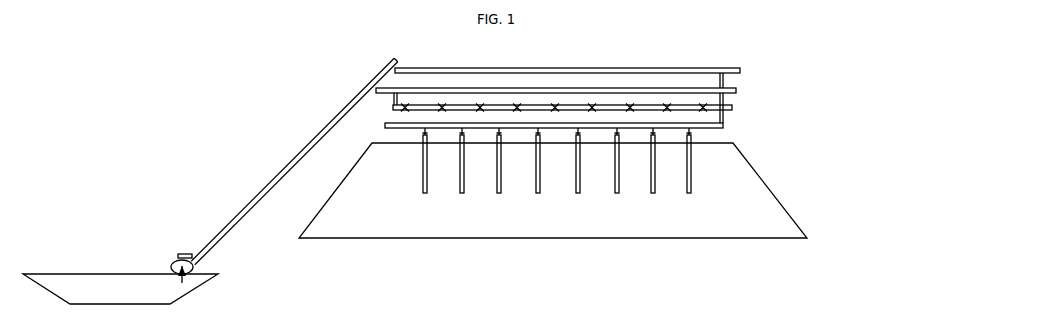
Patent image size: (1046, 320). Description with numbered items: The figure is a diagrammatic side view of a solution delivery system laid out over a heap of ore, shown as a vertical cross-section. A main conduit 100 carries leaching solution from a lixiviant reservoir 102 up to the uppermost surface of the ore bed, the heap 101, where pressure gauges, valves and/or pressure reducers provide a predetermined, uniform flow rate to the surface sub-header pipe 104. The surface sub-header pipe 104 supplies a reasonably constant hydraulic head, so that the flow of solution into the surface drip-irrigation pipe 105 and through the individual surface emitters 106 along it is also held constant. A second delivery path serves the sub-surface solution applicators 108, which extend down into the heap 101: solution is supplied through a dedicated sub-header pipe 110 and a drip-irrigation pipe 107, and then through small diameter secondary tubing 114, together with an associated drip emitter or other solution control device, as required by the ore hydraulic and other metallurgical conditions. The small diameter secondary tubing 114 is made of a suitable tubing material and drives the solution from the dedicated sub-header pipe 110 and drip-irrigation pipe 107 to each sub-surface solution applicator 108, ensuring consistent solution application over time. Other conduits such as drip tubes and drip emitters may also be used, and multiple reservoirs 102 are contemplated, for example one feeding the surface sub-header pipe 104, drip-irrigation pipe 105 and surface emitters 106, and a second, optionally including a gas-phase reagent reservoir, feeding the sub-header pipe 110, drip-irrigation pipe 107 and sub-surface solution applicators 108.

The main conduit 100 is at (280, 176).
The heap 101 is at (553, 190).
The lixiviant reservoir 102 is at (120, 289).
The surface sub-header pipe 104 is at (737, 88).
The surface drip-irrigation pipe 105 is at (736, 106).
The surface emitters 106 is at (670, 110).
The drip-irrigation pipe 107 is at (383, 124).
The sub-surface solution applicators 108 is at (696, 170).
The dedicated sub-header pipe 110 is at (668, 69).
The small diameter secondary tubing 114 is at (690, 132).